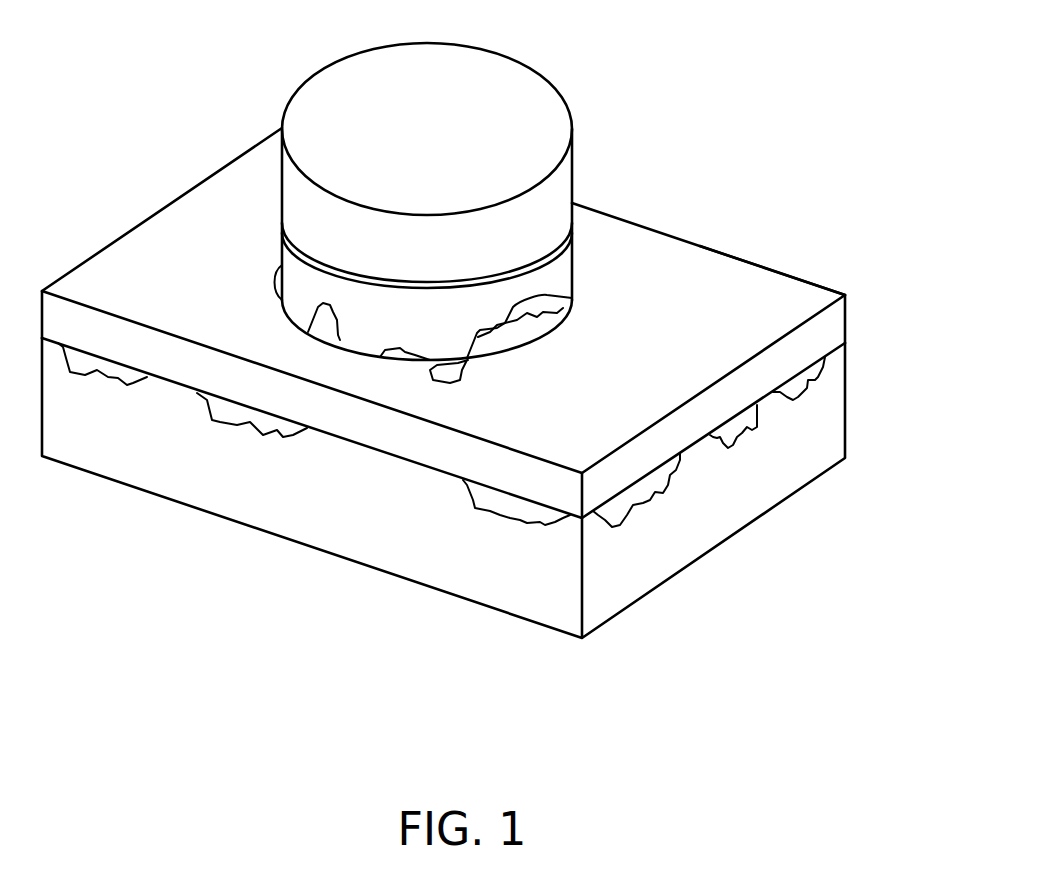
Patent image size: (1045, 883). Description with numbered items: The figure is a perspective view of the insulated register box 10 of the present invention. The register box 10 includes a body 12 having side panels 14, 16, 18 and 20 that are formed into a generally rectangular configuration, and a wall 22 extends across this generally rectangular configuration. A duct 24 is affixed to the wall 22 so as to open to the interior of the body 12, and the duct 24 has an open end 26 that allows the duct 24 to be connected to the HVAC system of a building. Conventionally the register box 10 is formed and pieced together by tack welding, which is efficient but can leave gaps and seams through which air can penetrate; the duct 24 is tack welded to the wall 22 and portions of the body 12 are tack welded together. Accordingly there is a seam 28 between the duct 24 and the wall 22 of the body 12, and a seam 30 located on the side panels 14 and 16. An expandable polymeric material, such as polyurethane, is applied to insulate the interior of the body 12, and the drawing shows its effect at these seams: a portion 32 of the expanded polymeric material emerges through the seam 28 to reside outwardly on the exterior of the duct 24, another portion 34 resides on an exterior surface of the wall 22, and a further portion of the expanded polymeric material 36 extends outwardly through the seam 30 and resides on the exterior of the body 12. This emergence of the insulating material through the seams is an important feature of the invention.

The insulated register box 10 is at (691, 182).
The body 12 is at (825, 410).
The side panel 14 is at (690, 548).
The side panel 16 is at (473, 587).
The side panel 18 is at (163, 206).
The side panel 20 is at (730, 253).
The wall 22 is at (736, 337).
The duct 24 is at (551, 205).
The open end 26 is at (542, 73).
The seam 28 is at (537, 338).
The seam 30 is at (382, 455).
The portion of expanded polymeric material 32 is at (572, 298).
The portion of expanded polymeric material 34 is at (462, 377).
The portion of expanded polymeric material 36 is at (257, 430).